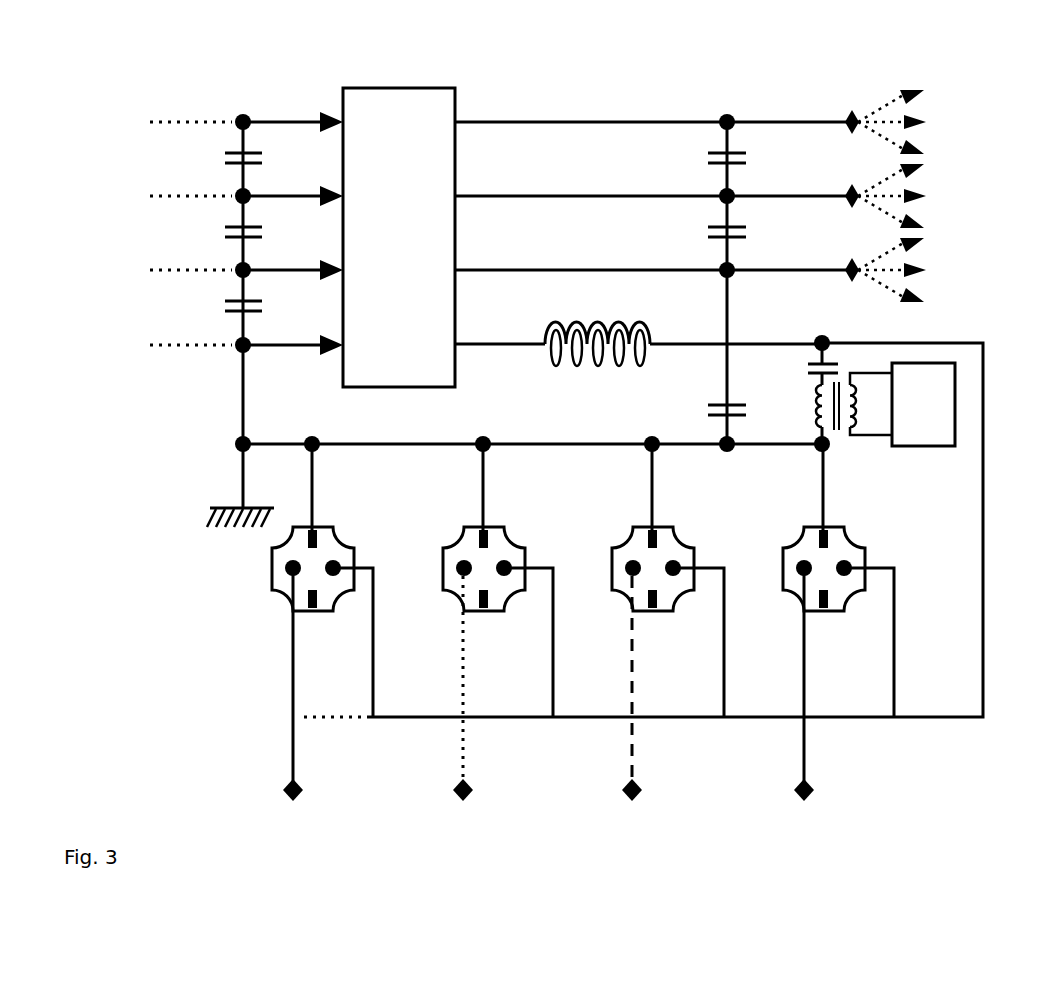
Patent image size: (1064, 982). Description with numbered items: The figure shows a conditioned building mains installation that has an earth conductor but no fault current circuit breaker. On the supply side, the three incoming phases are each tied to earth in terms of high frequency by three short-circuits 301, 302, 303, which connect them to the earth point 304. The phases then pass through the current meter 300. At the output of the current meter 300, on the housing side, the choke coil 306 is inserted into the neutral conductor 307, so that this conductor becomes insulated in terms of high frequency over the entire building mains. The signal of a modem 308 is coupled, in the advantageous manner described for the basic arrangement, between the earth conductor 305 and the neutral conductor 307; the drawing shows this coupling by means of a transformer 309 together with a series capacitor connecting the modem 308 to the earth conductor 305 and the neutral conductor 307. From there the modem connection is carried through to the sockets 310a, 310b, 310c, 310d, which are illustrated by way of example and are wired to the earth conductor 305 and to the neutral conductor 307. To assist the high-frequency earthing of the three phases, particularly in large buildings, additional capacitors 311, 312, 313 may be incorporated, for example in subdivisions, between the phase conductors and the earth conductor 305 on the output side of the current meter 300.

The current meter 300 is at (442, 108).
The short-circuit 301 is at (225, 158).
The short-circuit 302 is at (225, 233).
The short-circuit 303 is at (225, 305).
The earth point 304 is at (243, 500).
The earth conductor 305 is at (355, 444).
The choke coil 306 is at (572, 326).
The neutral conductor 307 is at (983, 655).
The modem 308 is at (943, 403).
The coupling transformer 309 is at (838, 432).
The socket 310a is at (335, 548).
The socket 310b is at (506, 548).
The socket 310c is at (675, 548).
The socket 310d is at (845, 548).
The additional capacitor 311 is at (706, 158).
The additional capacitor 312 is at (706, 232).
The additional capacitor 313 is at (706, 409).